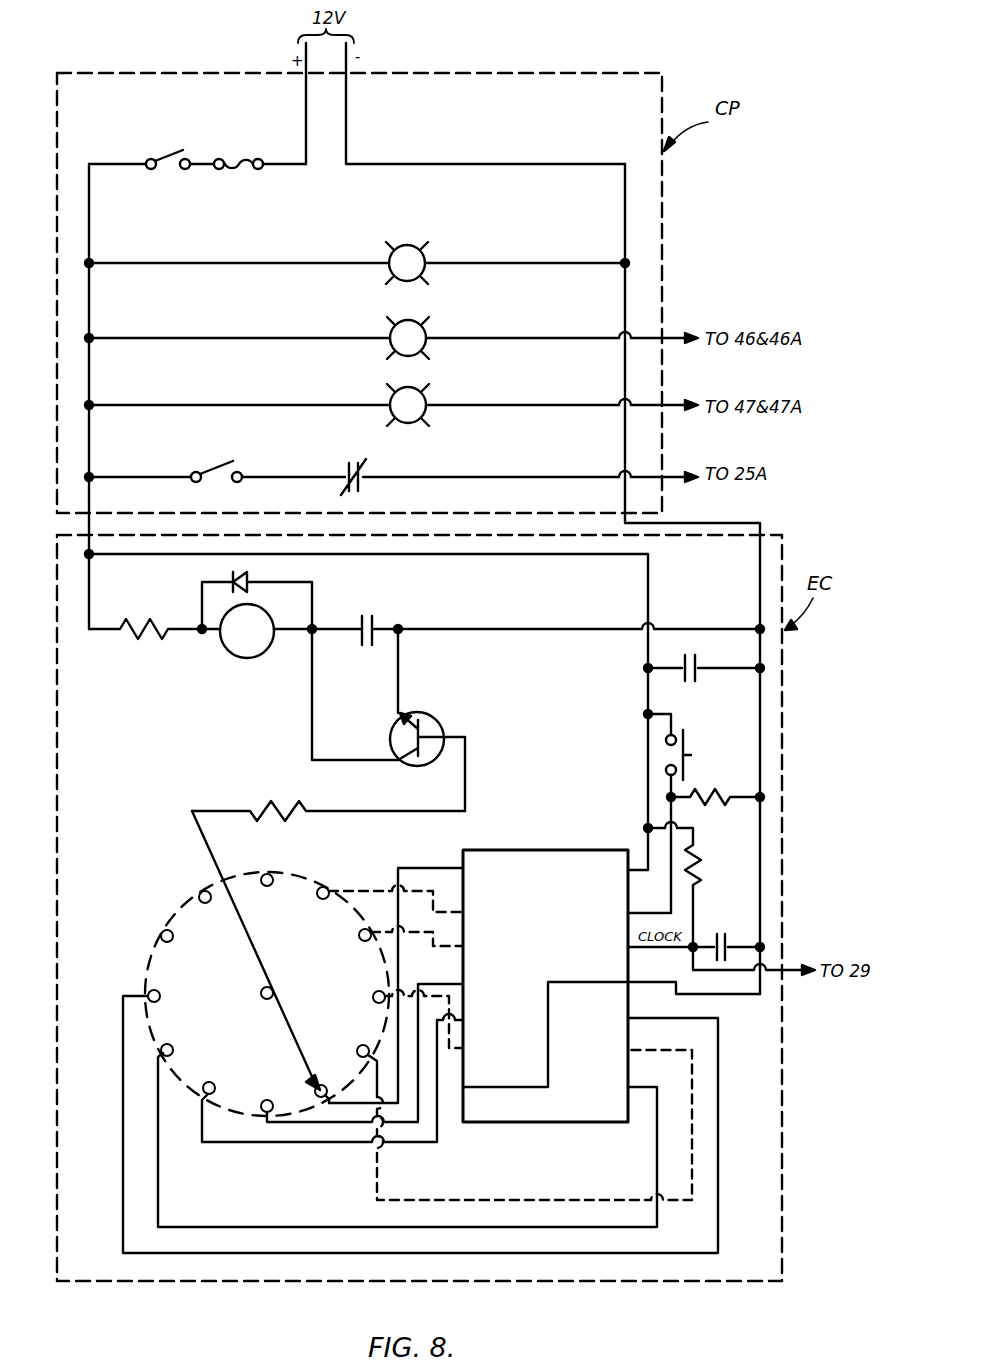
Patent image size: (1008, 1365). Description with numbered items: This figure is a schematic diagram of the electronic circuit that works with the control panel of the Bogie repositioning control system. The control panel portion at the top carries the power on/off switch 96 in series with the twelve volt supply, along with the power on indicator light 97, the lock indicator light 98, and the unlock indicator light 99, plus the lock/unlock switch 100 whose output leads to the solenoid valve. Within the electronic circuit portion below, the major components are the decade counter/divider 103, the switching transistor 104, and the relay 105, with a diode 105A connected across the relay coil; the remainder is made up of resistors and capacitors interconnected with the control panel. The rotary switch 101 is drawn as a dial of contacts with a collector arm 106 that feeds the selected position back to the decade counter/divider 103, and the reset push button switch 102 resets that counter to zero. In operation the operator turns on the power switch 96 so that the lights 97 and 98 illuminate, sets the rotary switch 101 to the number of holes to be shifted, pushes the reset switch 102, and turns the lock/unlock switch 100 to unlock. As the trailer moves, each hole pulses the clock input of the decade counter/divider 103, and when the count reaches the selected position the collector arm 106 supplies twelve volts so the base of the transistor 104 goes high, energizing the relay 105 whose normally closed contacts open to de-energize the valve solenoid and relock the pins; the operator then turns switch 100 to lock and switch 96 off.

The power on/off switch 96 is at (175, 158).
The power on indicator light 97 is at (414, 243).
The lock indicator light 98 is at (428, 330).
The unlock indicator light 99 is at (428, 418).
The lock/unlock switch 100 is at (213, 469).
The rotary switch 101 is at (181, 893).
The reset push button switch 102 is at (684, 738).
The decade counter/divider 103 is at (528, 1124).
The switching transistor 104 is at (432, 719).
The relay 105 is at (235, 658).
The diode 105A is at (253, 572).
The collector arm 106 is at (282, 1026).